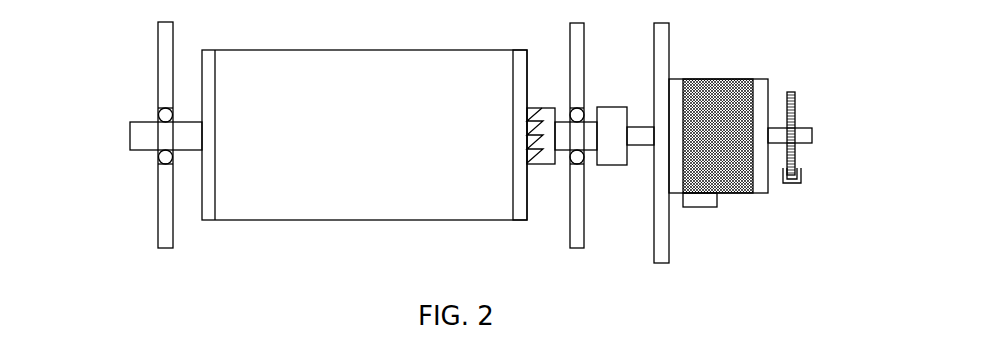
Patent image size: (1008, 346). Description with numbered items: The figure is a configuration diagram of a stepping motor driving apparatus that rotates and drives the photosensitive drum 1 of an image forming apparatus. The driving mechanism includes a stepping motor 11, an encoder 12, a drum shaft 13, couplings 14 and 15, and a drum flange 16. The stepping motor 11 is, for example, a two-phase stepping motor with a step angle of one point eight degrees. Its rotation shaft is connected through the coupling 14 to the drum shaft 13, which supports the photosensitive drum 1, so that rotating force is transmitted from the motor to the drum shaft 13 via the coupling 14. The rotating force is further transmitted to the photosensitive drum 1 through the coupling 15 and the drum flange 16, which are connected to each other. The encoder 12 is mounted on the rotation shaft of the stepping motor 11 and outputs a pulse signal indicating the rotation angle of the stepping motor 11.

The photosensitive drum 1 is at (387, 50).
The stepping motor 11 is at (723, 80).
The encoder 12 is at (790, 92).
The drum shaft 13 is at (138, 121).
The coupling 14 is at (612, 166).
The coupling 15 is at (543, 165).
The drum flange 16 is at (522, 221).